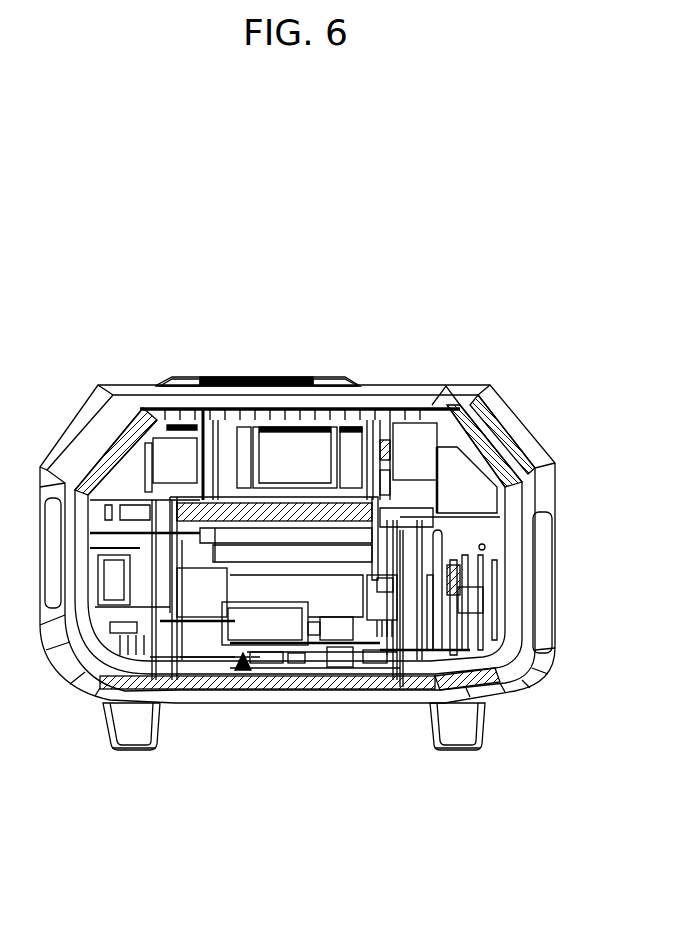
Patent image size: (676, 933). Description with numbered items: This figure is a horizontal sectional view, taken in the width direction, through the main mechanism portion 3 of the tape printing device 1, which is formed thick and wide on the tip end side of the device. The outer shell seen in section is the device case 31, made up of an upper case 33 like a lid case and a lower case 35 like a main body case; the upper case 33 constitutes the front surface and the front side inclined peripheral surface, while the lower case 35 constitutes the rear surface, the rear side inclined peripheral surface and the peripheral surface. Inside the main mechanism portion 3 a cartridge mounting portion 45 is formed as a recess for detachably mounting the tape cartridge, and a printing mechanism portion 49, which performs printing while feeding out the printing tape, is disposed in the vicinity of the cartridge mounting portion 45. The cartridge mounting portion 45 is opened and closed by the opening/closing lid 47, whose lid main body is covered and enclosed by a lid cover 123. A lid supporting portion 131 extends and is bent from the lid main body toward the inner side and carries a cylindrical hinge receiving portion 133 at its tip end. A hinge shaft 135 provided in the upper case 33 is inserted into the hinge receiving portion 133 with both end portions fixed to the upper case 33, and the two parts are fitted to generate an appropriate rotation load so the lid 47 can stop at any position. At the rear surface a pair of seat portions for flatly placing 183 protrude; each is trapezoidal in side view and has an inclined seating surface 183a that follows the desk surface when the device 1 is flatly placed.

The tape printing device 1 is at (304, 194).
The main mechanism portion 3 is at (441, 259).
The device case 31 is at (297, 551).
The upper case 33 is at (132, 390).
The lower case 35 is at (326, 705).
The cartridge mounting portion 45 is at (337, 590).
The opening/closing lid 47 is at (366, 345).
The printing mechanism portion 49 is at (242, 700).
The lid cover 123 is at (332, 376).
The lid supporting portion 131 is at (224, 376).
The hinge receiving portion 133 is at (293, 488).
The hinge shaft 135 is at (268, 508).
The seat portion for flatly placing 183 is at (130, 734).
The inclined seating surface 183a is at (138, 750).